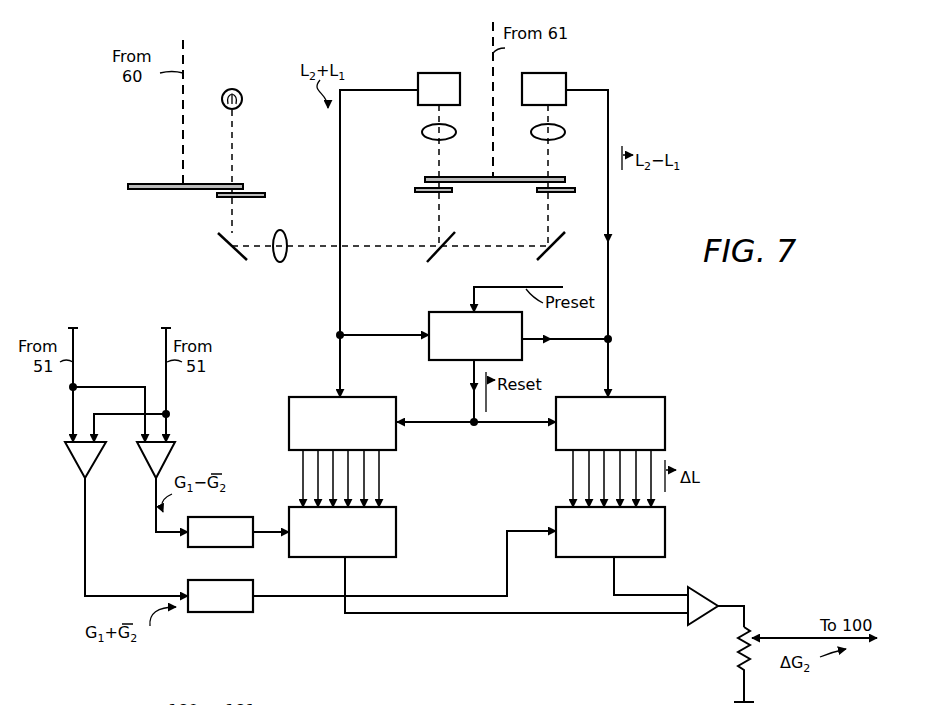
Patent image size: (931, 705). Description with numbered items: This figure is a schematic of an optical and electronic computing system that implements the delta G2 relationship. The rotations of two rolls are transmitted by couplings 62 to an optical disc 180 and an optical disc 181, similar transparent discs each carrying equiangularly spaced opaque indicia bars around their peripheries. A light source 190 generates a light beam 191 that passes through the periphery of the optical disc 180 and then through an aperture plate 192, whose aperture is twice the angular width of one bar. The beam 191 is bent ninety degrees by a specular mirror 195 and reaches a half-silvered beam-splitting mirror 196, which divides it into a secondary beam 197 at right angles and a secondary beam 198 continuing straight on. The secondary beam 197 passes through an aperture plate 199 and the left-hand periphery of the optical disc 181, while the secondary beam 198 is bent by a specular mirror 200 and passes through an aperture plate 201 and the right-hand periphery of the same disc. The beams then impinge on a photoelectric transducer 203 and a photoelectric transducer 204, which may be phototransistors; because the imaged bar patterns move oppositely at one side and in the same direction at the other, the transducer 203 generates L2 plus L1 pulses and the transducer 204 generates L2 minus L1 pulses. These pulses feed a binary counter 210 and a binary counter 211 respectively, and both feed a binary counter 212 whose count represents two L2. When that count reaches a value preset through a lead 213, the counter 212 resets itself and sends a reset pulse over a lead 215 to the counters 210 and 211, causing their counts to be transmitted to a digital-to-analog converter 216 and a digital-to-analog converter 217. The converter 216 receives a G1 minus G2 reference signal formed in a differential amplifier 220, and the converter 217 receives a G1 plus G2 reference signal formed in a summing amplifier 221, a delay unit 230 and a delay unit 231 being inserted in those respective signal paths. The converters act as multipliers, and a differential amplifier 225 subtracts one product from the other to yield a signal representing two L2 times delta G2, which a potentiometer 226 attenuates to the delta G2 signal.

The couplings 62 is at (183, 128).
The optical disc 180 is at (157, 184).
The optical disc 181 is at (518, 177).
The light source 190 is at (233, 88).
The light beam 191 is at (233, 145).
The aperture plate 192 is at (266, 195).
The specular mirror 195 is at (220, 244).
The half-silvered beam-splitting mirror 196 is at (432, 256).
The secondary beam 197 is at (441, 155).
The secondary beam 198 is at (550, 155).
The aperture plate 199 is at (420, 187).
The specular mirror 200 is at (556, 241).
The aperture plate 201 is at (573, 193).
The photoelectric transducer 203 is at (431, 73).
The photoelectric transducer 204 is at (567, 73).
The binary counter 210 is at (307, 397).
The binary counter 211 is at (650, 397).
The binary counter 212 is at (428, 321).
The lead 213 is at (565, 327).
The lead 215 is at (398, 407).
The digital-to-analog converter 216 is at (398, 525).
The digital-to-analog converter 217 is at (556, 523).
The differential amplifier 220 is at (176, 446).
The summing amplifier 221 is at (66, 452).
The differential amplifier 225 is at (705, 599).
The potentiometer 226 is at (741, 652).
The delay unit 230 is at (224, 517).
The delay unit 231 is at (255, 612).